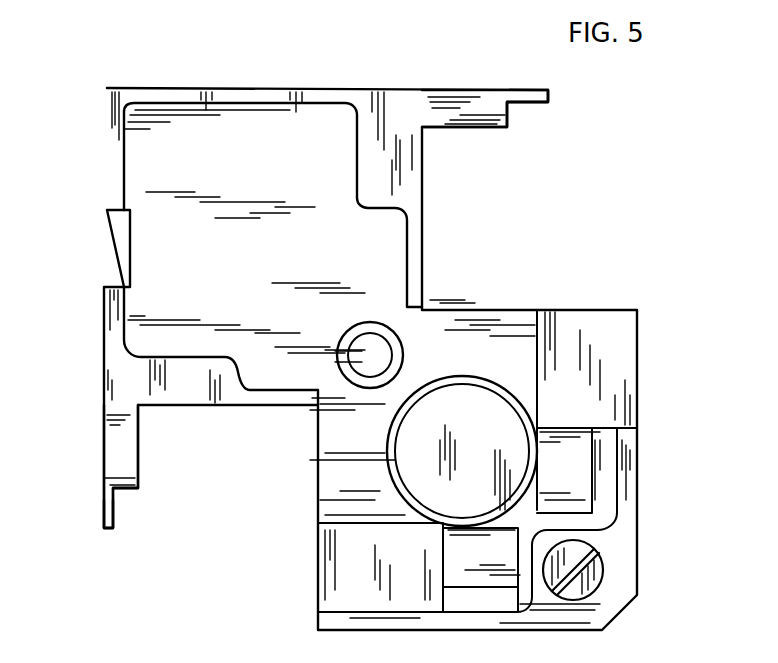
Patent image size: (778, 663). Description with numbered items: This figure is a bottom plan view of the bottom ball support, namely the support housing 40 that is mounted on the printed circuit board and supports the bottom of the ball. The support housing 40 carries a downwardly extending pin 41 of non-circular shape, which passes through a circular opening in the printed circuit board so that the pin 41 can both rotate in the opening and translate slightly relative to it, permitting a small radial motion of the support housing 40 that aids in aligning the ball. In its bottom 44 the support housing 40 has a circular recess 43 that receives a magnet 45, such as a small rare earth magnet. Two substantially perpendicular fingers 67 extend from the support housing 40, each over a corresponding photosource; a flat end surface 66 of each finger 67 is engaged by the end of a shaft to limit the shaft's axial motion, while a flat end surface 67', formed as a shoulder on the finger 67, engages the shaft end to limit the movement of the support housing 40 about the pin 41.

The support housing 40 is at (229, 78).
The pin 41 is at (583, 553).
The circular recess 43 is at (466, 382).
The bottom 44 is at (477, 342).
The magnet 45 is at (415, 463).
The flat end surface 66 is at (533, 104).
The finger 67 is at (289, 283).
The flat end surface 67' is at (345, 319).